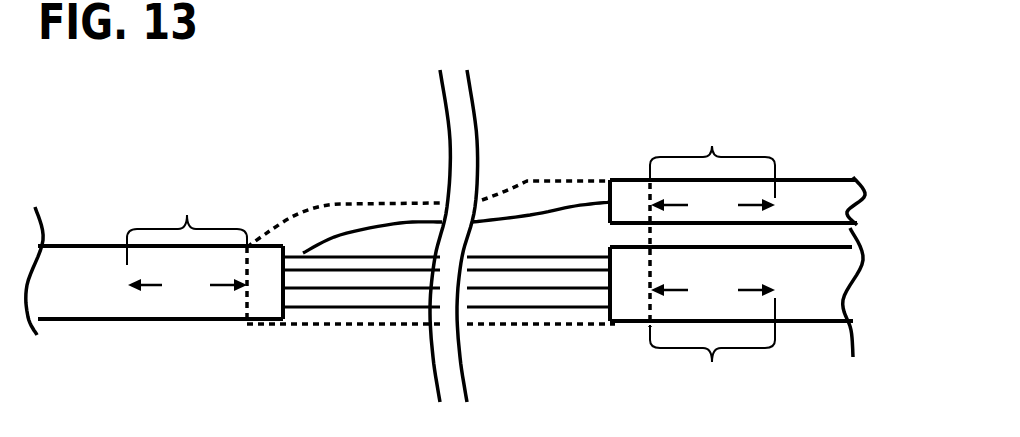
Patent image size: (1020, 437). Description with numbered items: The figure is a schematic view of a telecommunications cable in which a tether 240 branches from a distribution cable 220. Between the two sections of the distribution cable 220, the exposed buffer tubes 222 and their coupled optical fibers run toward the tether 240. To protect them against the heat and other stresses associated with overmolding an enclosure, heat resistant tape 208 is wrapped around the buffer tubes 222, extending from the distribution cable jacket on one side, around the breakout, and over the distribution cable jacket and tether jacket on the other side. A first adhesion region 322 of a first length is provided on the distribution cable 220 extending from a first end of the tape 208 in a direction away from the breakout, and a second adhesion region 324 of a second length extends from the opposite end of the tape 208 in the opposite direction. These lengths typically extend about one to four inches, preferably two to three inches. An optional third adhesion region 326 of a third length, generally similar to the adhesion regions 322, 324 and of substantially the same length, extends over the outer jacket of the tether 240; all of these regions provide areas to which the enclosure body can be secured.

The heat resistant tape 208 is at (530, 183).
The distribution cable 220 is at (75, 320).
The buffer tubes 222 is at (525, 298).
The tether 240 is at (793, 193).
The first adhesion region 322 is at (187, 237).
The second adhesion region 324 is at (712, 340).
The third adhesion region 326 is at (712, 216).